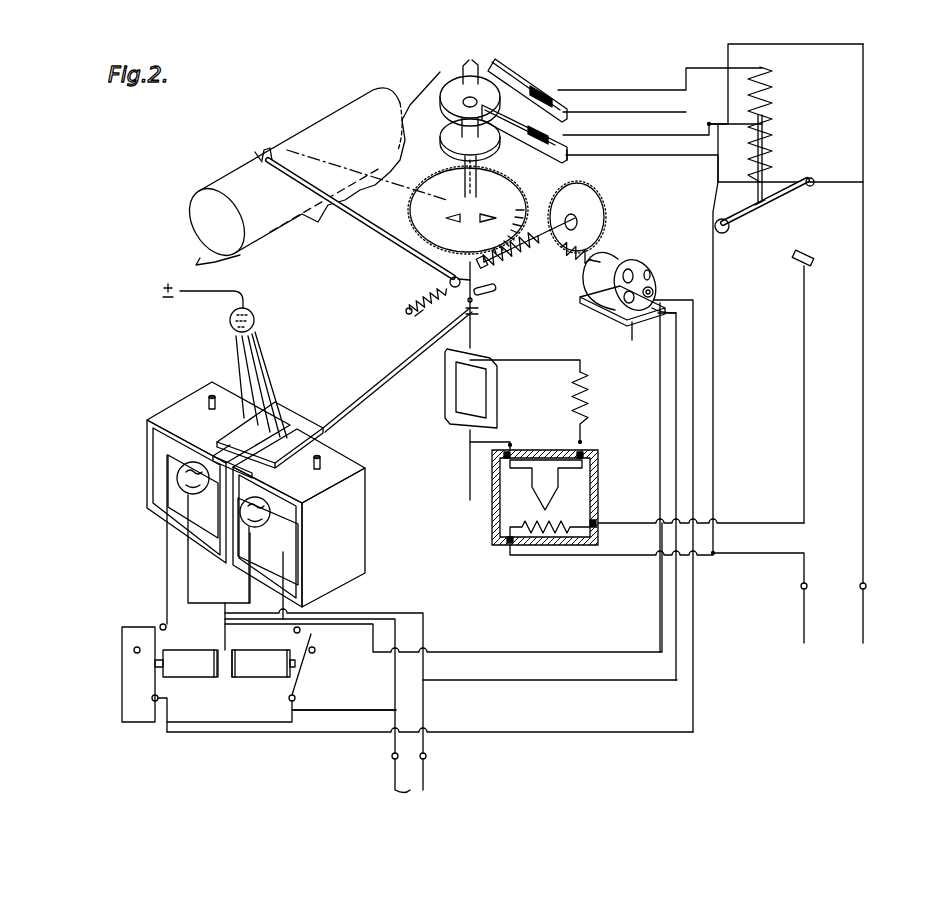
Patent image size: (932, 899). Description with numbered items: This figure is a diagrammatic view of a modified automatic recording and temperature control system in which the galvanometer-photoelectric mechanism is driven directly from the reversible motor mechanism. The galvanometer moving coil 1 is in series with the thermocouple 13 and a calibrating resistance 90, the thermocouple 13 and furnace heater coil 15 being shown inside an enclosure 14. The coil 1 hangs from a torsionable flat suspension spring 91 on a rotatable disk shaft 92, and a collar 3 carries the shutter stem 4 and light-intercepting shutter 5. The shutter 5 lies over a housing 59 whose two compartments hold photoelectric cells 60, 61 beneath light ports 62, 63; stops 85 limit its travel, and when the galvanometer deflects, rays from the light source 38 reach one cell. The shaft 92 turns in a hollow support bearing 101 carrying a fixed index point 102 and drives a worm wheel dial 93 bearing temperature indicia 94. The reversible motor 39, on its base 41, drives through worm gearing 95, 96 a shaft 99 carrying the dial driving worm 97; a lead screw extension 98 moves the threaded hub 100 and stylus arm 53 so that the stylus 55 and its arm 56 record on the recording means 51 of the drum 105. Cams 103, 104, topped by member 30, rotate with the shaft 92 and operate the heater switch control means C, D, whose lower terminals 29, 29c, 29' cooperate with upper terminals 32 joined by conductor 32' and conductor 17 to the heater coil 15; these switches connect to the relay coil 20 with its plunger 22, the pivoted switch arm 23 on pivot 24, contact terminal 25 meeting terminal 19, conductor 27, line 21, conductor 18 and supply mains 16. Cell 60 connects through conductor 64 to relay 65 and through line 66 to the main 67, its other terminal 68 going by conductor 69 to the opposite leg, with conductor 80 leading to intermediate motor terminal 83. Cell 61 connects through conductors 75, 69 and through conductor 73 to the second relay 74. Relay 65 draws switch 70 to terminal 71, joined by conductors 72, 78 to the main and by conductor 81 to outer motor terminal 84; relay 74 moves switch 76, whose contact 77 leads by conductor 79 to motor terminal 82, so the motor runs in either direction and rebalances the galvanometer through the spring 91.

The galvanometer moving coil 1 is at (440, 400).
The collar 3 is at (480, 311).
The shutter stem 4 is at (370, 370).
The shutter 5 is at (526, 217).
The thermocouple 13 is at (532, 492).
The heater box 14 is at (600, 472).
The heater coil 15 is at (530, 546).
The supply mains 16 is at (858, 636).
The conductor 17 is at (745, 556).
The wire 18 is at (780, 520).
The terminal 19 is at (805, 252).
The controller relay coil 20 is at (766, 122).
The line 21 is at (724, 148).
The reciprocable plunger 22 is at (773, 83).
The pivoted switch arm 23 is at (762, 205).
The pivot point 24 is at (727, 233).
The contact terminal 25 is at (812, 178).
The conductor 27 is at (864, 180).
The contact wire 29 is at (624, 103).
The lower switch terminal 29c is at (576, 160).
The contact wire 29' is at (714, 168).
The fork 30 is at (472, 60).
The upper terminals 32 is at (526, 74).
The conductor 32' is at (606, 127).
The furnace heater switch C is at (527, 87).
The furnace heater switch D is at (572, 140).
The light source 38 is at (255, 312).
The reversible motor 39 is at (625, 256).
The motor base 41 is at (580, 300).
The recording means 51 is at (230, 175).
The stylus arm 53 is at (378, 236).
The stylus 55 is at (266, 148).
The bracket arm 56 is at (256, 150).
The housing 59 is at (370, 472).
The photoelectric cell 60 is at (178, 479).
The photoelectric cell 61 is at (270, 515).
The light port 62 is at (278, 472).
The light port 63 is at (215, 455).
The conductor 64 is at (165, 556).
The relay 65 is at (190, 650).
The line 66 is at (397, 620).
The main source of current supply 67 is at (424, 785).
The cell terminal 68 is at (186, 575).
The conductor 69 is at (400, 612).
The motor circuit controlling switch 70 is at (121, 660).
The terminal 71 is at (160, 623).
The conductor 72 is at (134, 723).
The conductor 73 is at (290, 556).
The second relay 74 is at (255, 678).
The conductor 75 is at (240, 586).
The switch 76 is at (306, 676).
The switch contact 77 is at (302, 628).
The conductor 78 is at (345, 709).
The conductor 79 is at (540, 652).
The conductor 80 is at (535, 682).
The conductor 81 is at (522, 734).
The motor terminal 82 is at (632, 330).
The intermediate motor terminal 83 is at (670, 320).
The outer motor terminal 84 is at (660, 302).
The stops 85 is at (205, 395).
The calibrating resistance 90 is at (590, 395).
The suspension spring 91 is at (497, 292).
The disk shaft 92 is at (445, 274).
The worm wheel dial 93 is at (518, 190).
The temperature indicia 94 is at (521, 206).
The worm 95 is at (614, 234).
The worm gear 96 is at (601, 200).
The dial driving worm 97 is at (515, 264).
The lead screw extension 98 is at (416, 316).
The shaft 99 is at (568, 257).
The threaded hub 100 is at (408, 307).
The hollow support bearing 101 is at (479, 180).
The index point 102 is at (412, 196).
The cam 103 is at (452, 80).
The cam 104 is at (402, 92).
The drum 105 is at (192, 214).